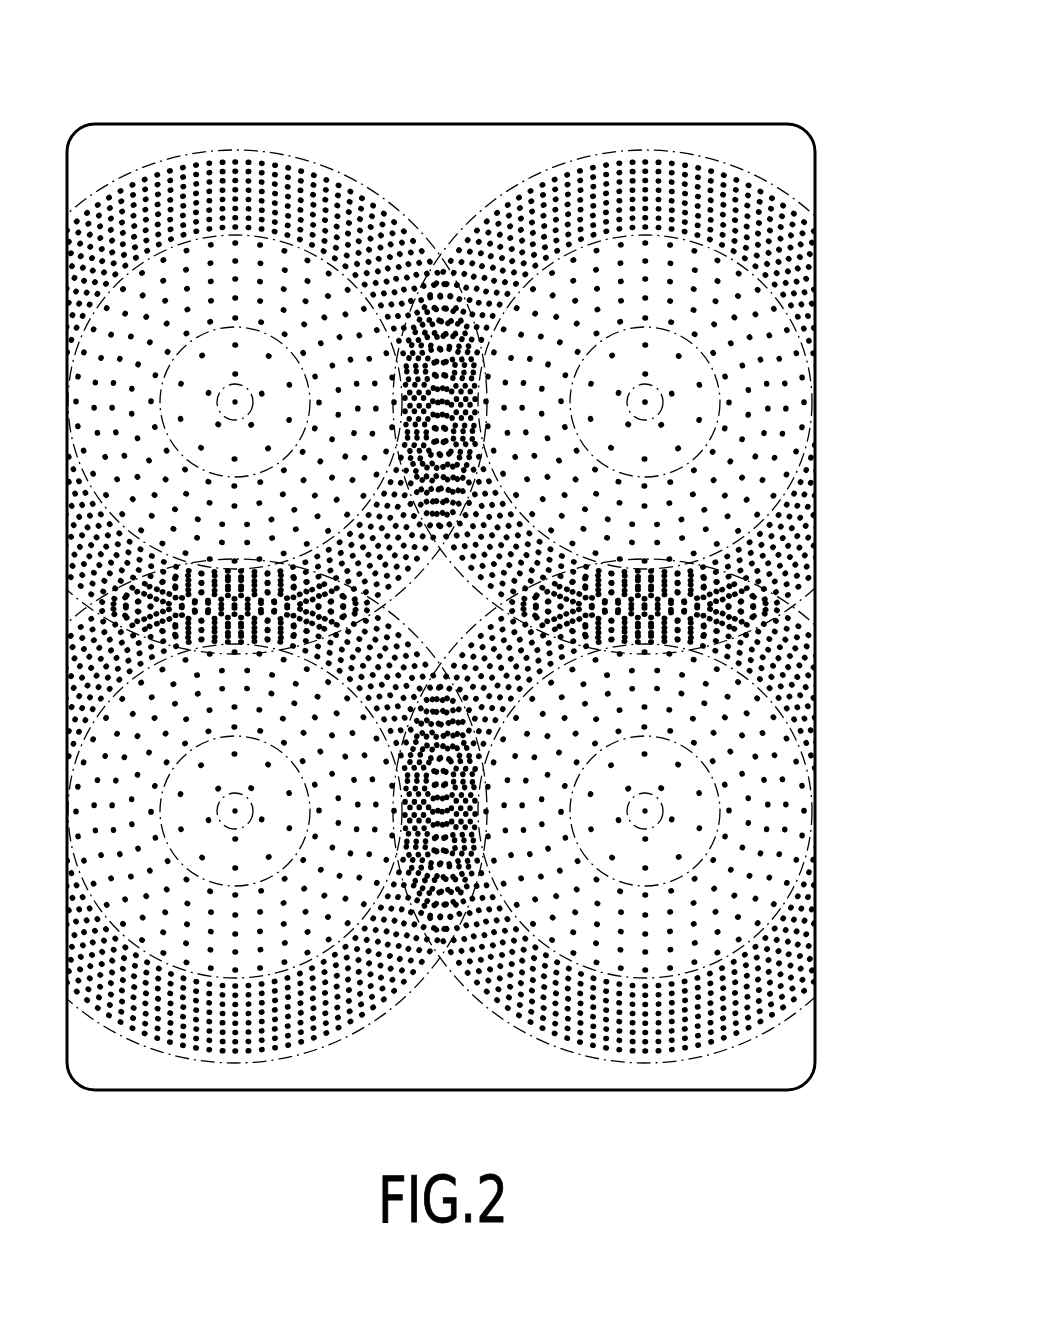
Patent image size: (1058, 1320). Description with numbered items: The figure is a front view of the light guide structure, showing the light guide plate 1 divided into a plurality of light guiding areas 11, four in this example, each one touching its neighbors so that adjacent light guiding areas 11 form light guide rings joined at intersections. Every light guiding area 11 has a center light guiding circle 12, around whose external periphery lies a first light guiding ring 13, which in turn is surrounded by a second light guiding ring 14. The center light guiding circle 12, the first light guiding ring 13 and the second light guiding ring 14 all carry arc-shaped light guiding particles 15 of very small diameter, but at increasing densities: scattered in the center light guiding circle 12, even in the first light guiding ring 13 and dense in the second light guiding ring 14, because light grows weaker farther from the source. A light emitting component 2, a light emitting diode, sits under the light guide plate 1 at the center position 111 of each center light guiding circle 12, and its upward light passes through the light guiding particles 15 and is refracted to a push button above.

The light guide plate 1 is at (426, 133).
The light guiding area 11 is at (661, 327).
The center position 111 is at (645, 402).
The center light guiding circle 12 is at (816, 319).
The first light guiding ring 13 is at (823, 267).
The second light guiding ring 14 is at (705, 160).
The light guiding particles 15 is at (698, 386).
The light emitting component 2 is at (660, 422).